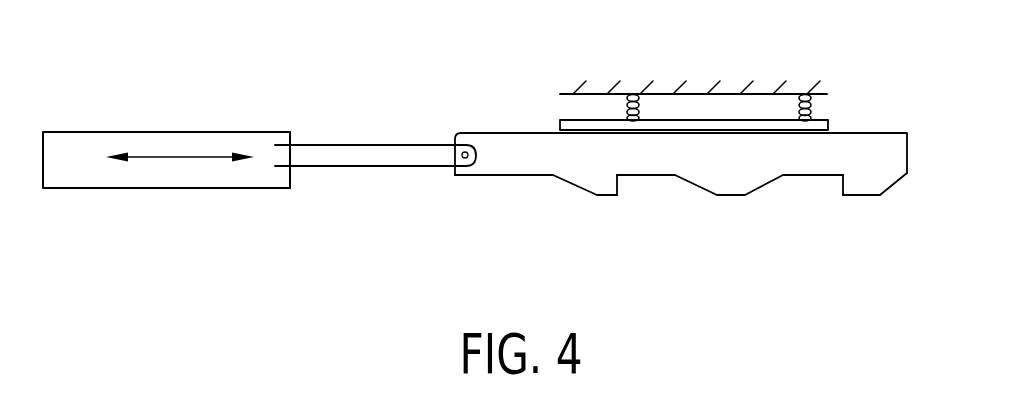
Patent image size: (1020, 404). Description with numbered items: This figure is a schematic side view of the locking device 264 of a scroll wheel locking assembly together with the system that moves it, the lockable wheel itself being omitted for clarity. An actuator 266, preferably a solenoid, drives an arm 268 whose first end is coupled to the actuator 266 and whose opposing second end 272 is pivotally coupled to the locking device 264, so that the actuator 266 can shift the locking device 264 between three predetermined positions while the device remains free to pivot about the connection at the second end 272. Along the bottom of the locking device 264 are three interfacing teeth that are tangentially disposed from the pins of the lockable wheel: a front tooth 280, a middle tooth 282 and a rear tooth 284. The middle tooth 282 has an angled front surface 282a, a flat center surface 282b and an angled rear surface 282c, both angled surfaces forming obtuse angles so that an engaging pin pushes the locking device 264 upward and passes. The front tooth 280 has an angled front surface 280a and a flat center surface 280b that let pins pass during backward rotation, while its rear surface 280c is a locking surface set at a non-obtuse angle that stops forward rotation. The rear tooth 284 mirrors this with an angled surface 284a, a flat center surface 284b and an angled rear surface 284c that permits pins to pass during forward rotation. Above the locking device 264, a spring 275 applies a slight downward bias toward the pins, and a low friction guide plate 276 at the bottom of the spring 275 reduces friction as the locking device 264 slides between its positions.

The locking device 264 is at (888, 147).
The actuator 266 is at (183, 142).
The arm 268 is at (375, 153).
The second end 272 is at (463, 160).
The spring 275 is at (747, 120).
The low friction guide plate 276 is at (627, 108).
The front tooth 280 is at (876, 228).
The angled front surface 280a is at (870, 180).
The flat center surface 280b is at (850, 198).
The rear surface 280c is at (840, 196).
The middle tooth 282 is at (715, 231).
The angled front surface 282a is at (762, 188).
The flat center surface 282b is at (733, 197).
The angled rear surface 282c is at (706, 197).
The rear tooth 284 is at (582, 230).
The angled rear surface 284a is at (620, 192).
The flat center surface 284b is at (610, 197).
The angled rear surface 284c is at (575, 188).